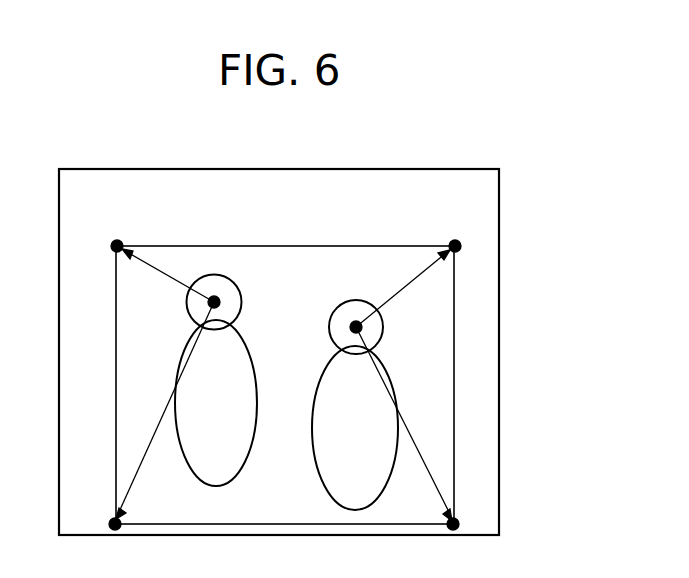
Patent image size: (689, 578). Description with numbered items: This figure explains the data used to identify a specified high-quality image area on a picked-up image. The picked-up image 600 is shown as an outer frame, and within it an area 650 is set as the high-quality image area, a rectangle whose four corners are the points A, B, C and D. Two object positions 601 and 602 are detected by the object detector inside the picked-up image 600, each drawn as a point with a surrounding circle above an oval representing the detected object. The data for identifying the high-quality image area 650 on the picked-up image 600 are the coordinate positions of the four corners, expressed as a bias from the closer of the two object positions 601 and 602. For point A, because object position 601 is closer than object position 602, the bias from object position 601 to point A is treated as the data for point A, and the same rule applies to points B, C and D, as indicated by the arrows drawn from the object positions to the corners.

The picked-up image 600 is at (83, 169).
The high-quality image area 650 is at (455, 308).
The object position 601 is at (216, 301).
The object position 602 is at (356, 327).